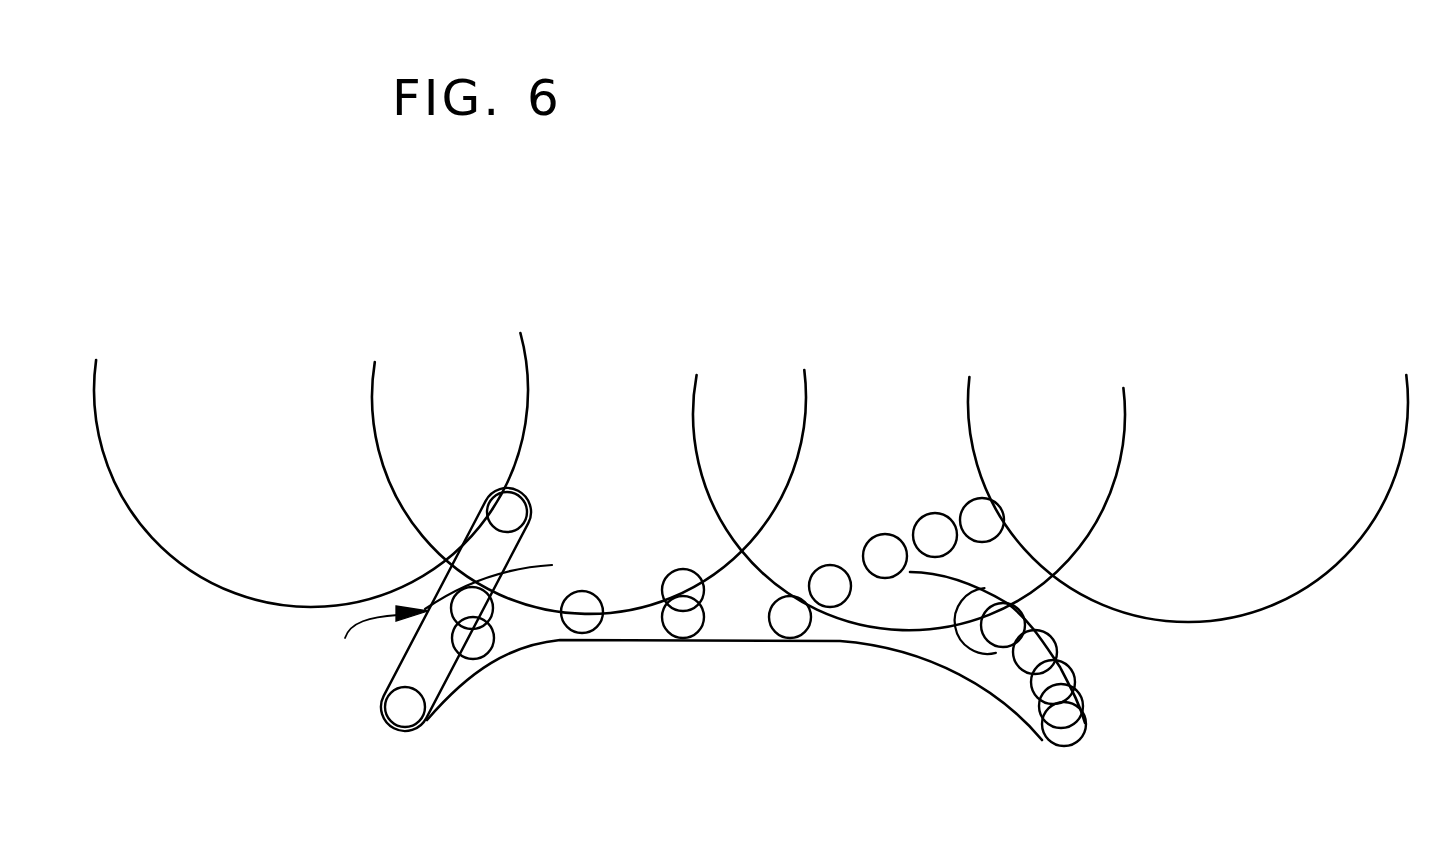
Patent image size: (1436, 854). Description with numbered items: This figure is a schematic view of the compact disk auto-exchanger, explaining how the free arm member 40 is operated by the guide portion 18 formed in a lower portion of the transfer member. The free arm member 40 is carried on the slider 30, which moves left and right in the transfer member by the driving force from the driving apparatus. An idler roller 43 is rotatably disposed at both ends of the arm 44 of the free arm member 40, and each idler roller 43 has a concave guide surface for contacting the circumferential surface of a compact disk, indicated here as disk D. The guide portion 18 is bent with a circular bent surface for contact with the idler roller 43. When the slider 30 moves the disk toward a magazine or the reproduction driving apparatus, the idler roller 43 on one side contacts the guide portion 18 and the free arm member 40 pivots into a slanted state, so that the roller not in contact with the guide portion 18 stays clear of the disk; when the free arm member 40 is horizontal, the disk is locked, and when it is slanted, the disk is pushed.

The drum D is at (242, 447).
The guide portion 18 is at (527, 567).
The slider 30 is at (738, 802).
The free arm member 40 is at (361, 630).
The idler roller 43 is at (407, 712).
The arm 44 is at (417, 672).